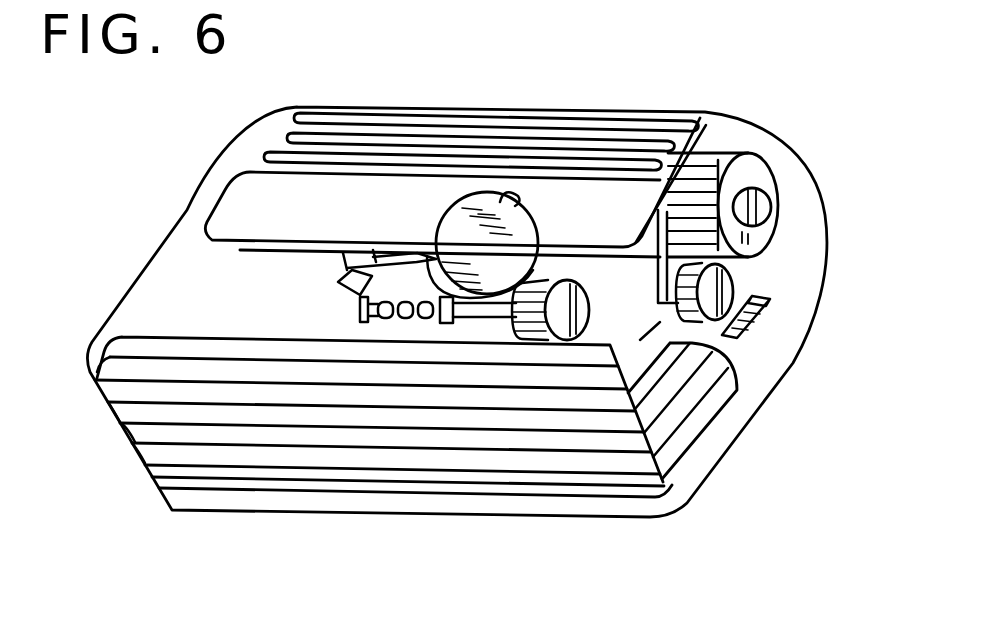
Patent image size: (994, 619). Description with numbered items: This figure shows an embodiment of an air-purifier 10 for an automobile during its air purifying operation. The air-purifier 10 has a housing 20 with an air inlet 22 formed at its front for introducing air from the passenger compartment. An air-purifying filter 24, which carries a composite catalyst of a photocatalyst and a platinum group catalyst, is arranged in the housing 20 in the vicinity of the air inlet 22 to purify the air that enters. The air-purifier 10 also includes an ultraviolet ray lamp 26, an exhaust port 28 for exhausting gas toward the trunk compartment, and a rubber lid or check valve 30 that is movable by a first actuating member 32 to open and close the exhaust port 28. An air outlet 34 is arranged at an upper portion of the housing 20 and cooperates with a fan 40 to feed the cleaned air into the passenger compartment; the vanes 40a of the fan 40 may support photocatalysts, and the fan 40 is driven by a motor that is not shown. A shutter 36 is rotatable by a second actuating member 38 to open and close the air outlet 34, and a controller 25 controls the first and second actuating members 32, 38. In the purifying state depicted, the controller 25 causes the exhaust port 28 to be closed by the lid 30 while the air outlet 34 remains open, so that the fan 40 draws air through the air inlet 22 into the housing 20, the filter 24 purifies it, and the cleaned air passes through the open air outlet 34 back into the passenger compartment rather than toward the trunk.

The air-purifier 10 is at (303, 98).
The housing 20 is at (392, 108).
The air inlet 22 is at (140, 407).
The air-purifying filter 24 is at (150, 345).
The controller 25 is at (765, 322).
The ultraviolet ray lamp 26 is at (463, 320).
The exhaust port 28 is at (500, 190).
The rubber lid or check valve 30 is at (518, 205).
The first actuating member 32 is at (343, 287).
The air outlet 34 is at (502, 140).
The shutter 36 is at (245, 198).
The second actuating member 38 is at (738, 278).
The fan 40 is at (758, 177).
The vanes 40a is at (732, 104).